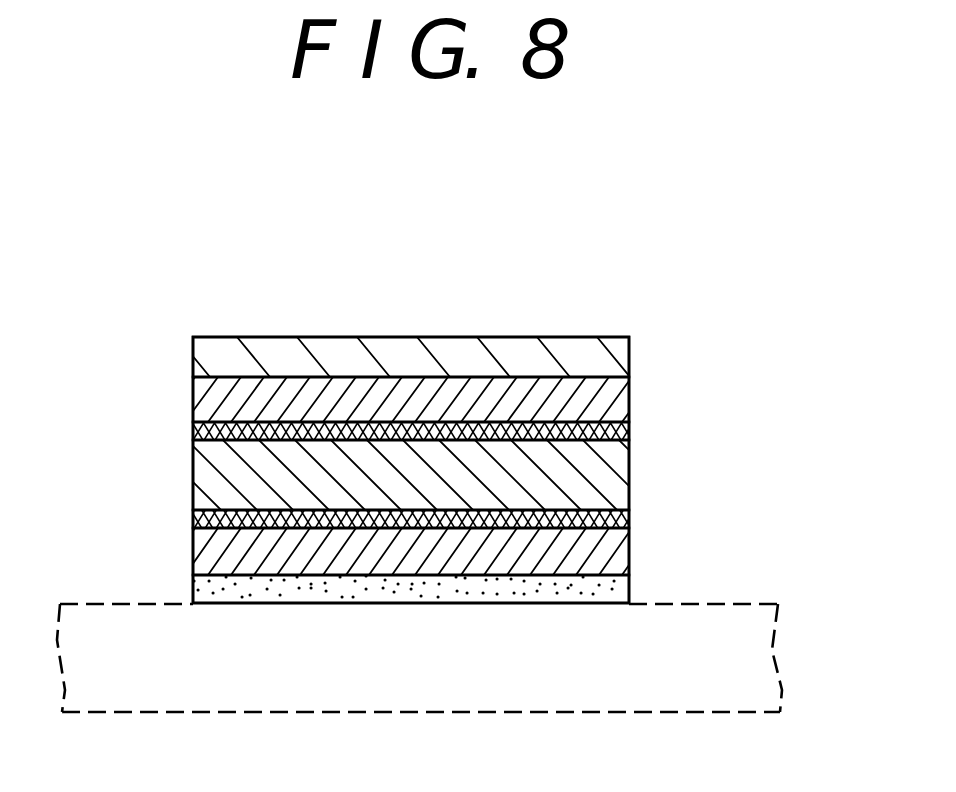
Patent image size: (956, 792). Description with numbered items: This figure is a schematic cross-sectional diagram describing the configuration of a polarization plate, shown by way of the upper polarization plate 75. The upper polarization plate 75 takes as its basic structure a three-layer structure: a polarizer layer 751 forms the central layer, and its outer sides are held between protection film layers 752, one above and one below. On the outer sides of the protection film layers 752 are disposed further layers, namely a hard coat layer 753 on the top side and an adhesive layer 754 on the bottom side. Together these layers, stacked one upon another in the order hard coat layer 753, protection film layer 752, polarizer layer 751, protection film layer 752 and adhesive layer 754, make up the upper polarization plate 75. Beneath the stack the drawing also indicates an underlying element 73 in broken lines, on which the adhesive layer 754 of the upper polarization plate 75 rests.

The upper polarization plate 75 is at (330, 326).
The hard coat layer 753 is at (570, 345).
The protection film layers 752 is at (630, 398).
The polarizer layer 751 is at (630, 473).
The adhesive layer 754 is at (193, 592).
The base / substrate 73 is at (750, 660).